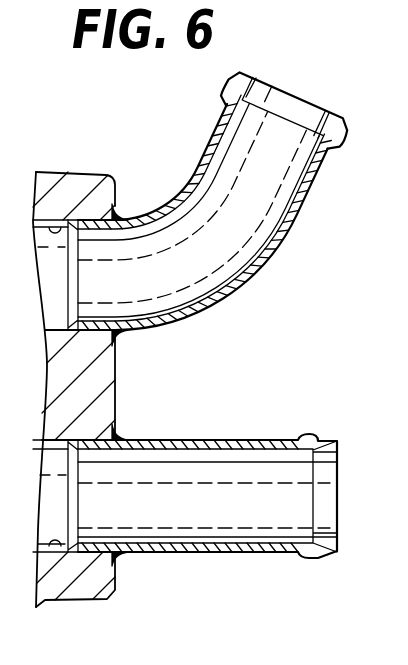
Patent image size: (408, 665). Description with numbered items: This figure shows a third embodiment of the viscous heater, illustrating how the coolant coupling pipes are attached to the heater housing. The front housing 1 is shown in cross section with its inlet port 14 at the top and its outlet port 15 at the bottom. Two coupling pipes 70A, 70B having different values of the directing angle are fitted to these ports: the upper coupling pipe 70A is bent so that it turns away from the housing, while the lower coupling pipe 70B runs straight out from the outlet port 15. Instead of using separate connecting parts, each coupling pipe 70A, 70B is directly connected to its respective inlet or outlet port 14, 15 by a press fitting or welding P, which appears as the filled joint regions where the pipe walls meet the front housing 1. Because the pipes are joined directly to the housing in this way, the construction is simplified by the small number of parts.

The front housing 1 is at (103, 372).
The inlet port 14 is at (61, 222).
The outlet port 15 is at (63, 600).
The coupling pipe 70A is at (199, 167).
The coupling pipe 70B is at (230, 550).
The press fitting or welding P is at (157, 628).